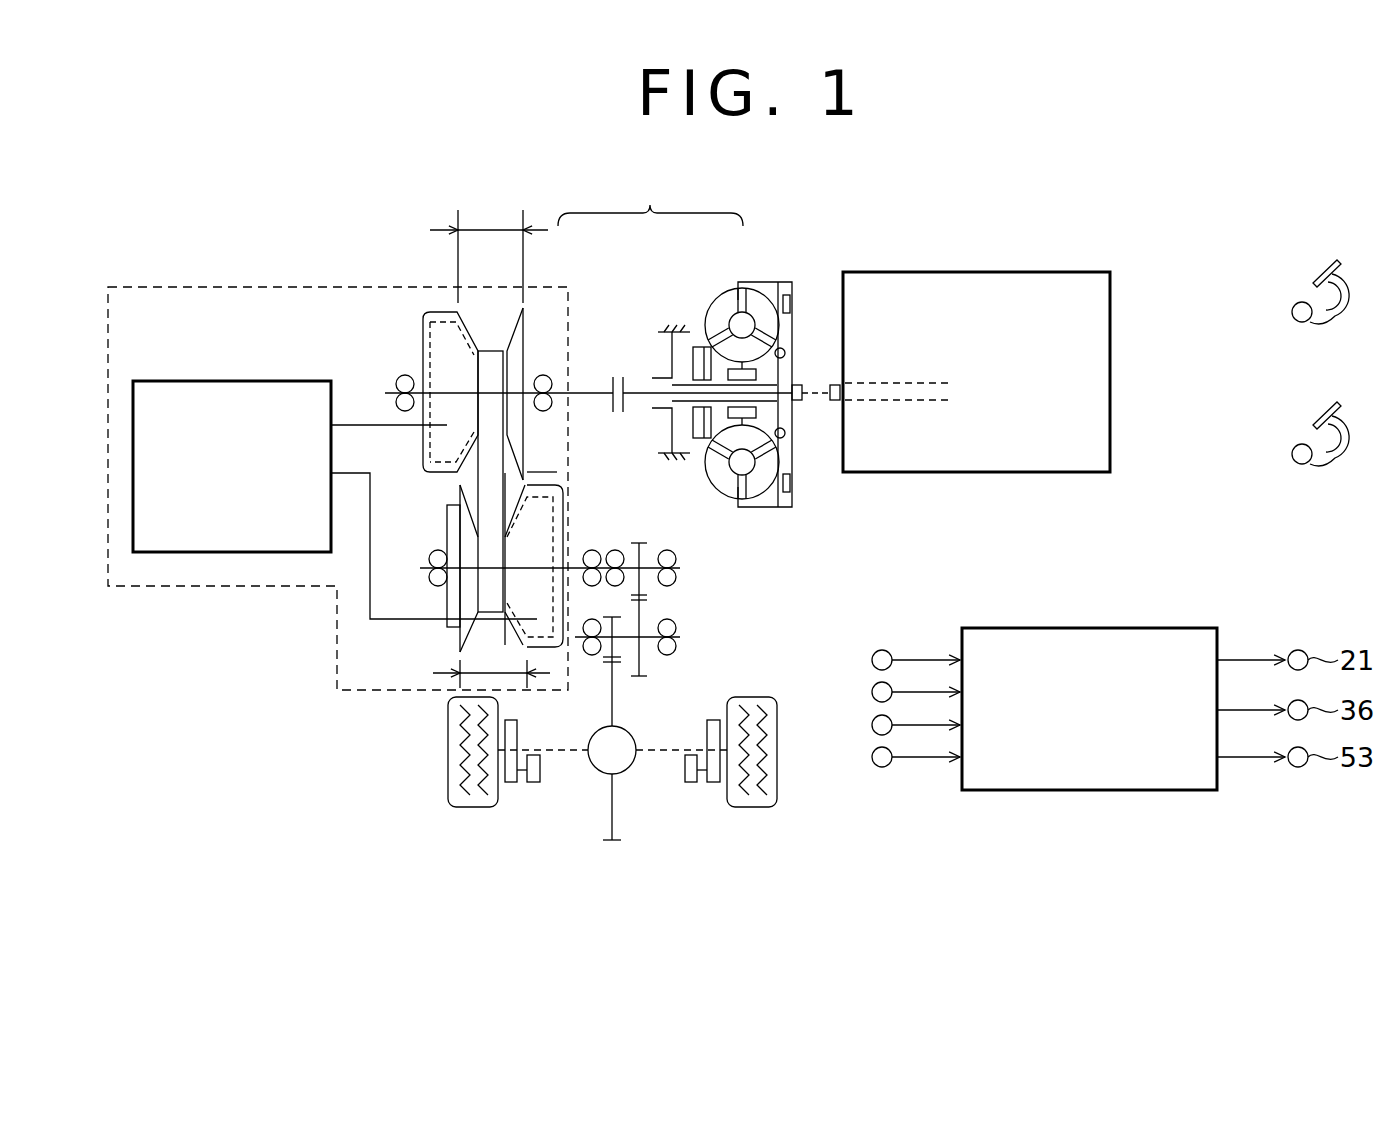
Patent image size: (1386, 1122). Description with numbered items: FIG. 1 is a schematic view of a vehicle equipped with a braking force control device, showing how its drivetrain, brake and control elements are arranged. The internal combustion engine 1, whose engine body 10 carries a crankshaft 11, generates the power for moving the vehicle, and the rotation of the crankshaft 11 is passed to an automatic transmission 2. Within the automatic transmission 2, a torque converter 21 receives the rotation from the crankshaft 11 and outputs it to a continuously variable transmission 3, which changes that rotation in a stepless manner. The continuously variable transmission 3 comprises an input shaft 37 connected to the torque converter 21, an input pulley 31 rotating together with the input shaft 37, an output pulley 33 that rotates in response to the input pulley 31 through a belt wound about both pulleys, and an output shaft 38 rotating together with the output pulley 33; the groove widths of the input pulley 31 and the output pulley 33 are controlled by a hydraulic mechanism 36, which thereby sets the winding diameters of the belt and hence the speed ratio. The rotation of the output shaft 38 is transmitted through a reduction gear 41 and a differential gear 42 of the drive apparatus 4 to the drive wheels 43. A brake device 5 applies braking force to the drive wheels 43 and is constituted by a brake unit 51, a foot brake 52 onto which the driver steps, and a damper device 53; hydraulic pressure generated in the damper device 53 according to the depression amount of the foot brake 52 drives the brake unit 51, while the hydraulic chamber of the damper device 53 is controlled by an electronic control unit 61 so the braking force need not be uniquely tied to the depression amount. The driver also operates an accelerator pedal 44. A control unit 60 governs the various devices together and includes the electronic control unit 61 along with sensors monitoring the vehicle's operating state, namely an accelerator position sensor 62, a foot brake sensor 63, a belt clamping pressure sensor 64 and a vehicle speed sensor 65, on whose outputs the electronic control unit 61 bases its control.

The internal combustion engine 1 is at (1036, 245).
The automatic transmission 2 is at (650, 198).
The continuously variable transmission 3 is at (553, 287).
The drive apparatus 4 is at (710, 678).
The brake device 5 is at (508, 873).
The engine body 10 is at (1110, 373).
The crankshaft 11 is at (838, 405).
The torque converter 21 is at (745, 281).
The input pulley 31 is at (405, 323).
The output pulley 33 is at (440, 521).
The hydraulic mechanism 36 is at (230, 392).
The input shaft 37 is at (585, 392).
The output shaft 38 is at (573, 566).
The reduction gear 41 is at (678, 585).
The differential gear 42 is at (636, 735).
The drive wheels 43 is at (470, 808).
The accelerator pedal 44 is at (1337, 258).
The brake unit 51 is at (510, 783).
The foot brake 52 is at (1337, 400).
The damper device 53 is at (545, 770).
The control unit 60 is at (1045, 620).
The electronic control unit 61 is at (1132, 640).
The accelerator position sensor 62 is at (870, 660).
The foot brake sensor 63 is at (870, 692).
The belt clamping pressure sensor 64 is at (870, 725).
The vehicle speed sensor 65 is at (870, 757).